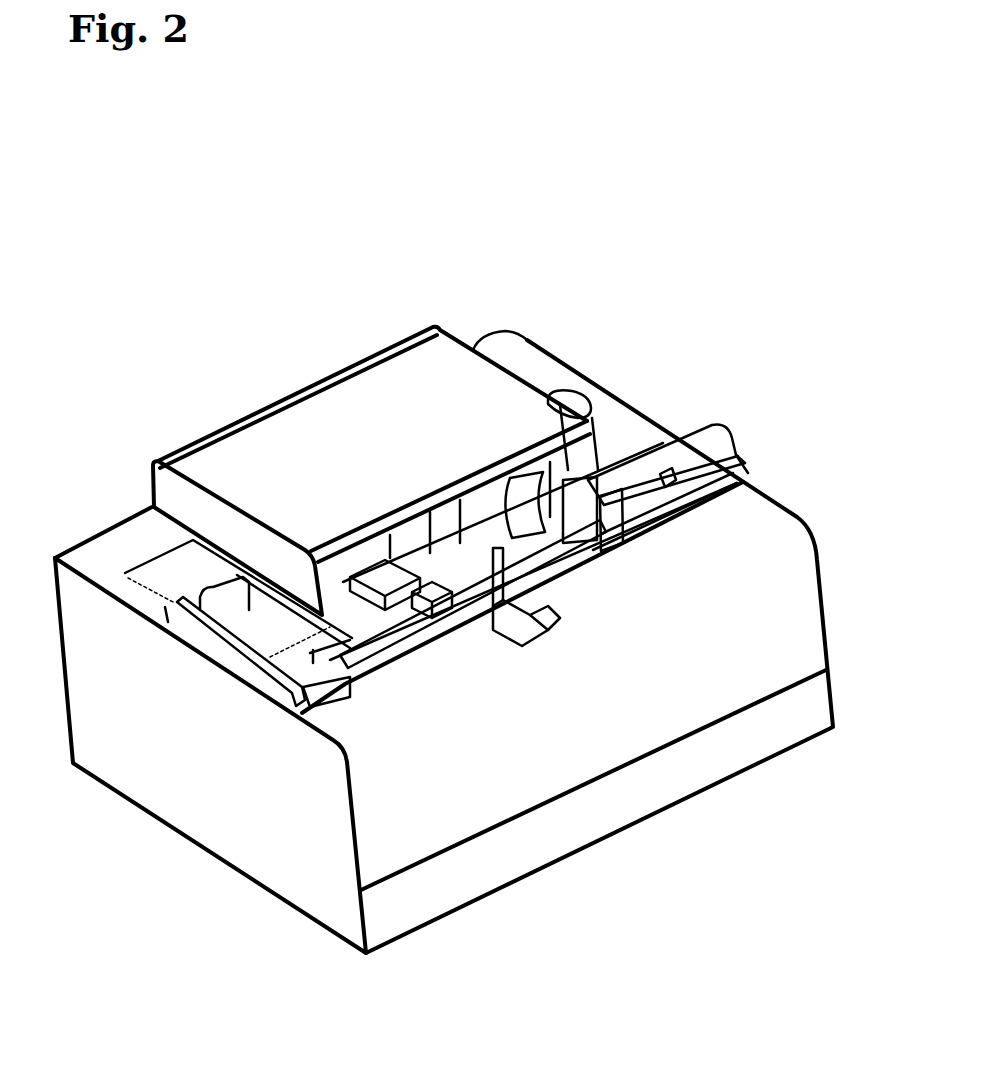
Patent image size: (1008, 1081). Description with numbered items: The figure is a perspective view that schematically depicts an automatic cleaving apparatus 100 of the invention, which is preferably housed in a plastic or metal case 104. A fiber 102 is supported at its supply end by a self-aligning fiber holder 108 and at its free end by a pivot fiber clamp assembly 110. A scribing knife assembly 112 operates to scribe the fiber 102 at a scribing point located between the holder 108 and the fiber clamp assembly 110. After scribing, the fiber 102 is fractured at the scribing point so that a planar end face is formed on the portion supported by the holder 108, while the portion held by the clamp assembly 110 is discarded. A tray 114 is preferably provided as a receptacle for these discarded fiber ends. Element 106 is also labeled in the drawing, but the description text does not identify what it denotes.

The automatic cleaving apparatus 100 is at (158, 293).
The fiber 102 is at (347, 685).
The case 104 is at (774, 624).
The hinge 106 is at (598, 400).
The self-aligning fiber holder 108 is at (740, 440).
The pivot fiber clamp assembly 110 is at (372, 556).
The scribing knife assembly 112 is at (501, 604).
The tray 114 is at (163, 584).